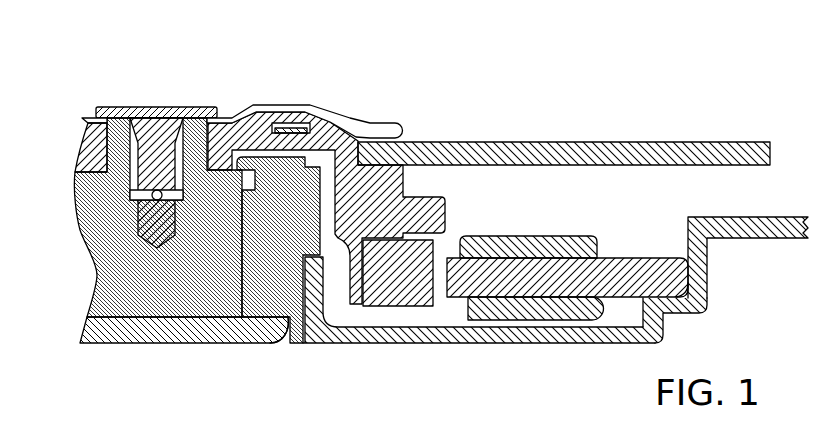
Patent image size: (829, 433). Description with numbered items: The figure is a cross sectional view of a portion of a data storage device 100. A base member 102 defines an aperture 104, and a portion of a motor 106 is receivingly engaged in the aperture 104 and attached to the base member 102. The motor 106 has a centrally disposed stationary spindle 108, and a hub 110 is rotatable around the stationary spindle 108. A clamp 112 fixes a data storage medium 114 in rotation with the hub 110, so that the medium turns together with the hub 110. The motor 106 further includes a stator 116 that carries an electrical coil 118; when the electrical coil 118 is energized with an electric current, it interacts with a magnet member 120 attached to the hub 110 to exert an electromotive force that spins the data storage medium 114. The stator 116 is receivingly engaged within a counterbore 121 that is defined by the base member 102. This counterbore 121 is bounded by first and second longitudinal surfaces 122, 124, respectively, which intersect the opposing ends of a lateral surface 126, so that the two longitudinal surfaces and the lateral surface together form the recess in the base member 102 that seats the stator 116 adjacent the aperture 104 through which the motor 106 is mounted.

The data storage device 100 is at (170, 58).
The base member 102 is at (543, 342).
The aperture 104 is at (291, 335).
The motor 106 is at (88, 255).
The stationary spindle 108 is at (130, 295).
The hub 110 is at (400, 180).
The clamp 112 is at (313, 100).
The data storage medium 114 is at (500, 142).
The stator 116 is at (621, 255).
The electrical coil 118 is at (497, 237).
The magnet member 120 is at (390, 306).
The counterbore 121 is at (725, 262).
The first longitudinal surface 122 is at (690, 245).
The second longitudinal surface 124 is at (660, 328).
The lateral surface 126 is at (700, 288).